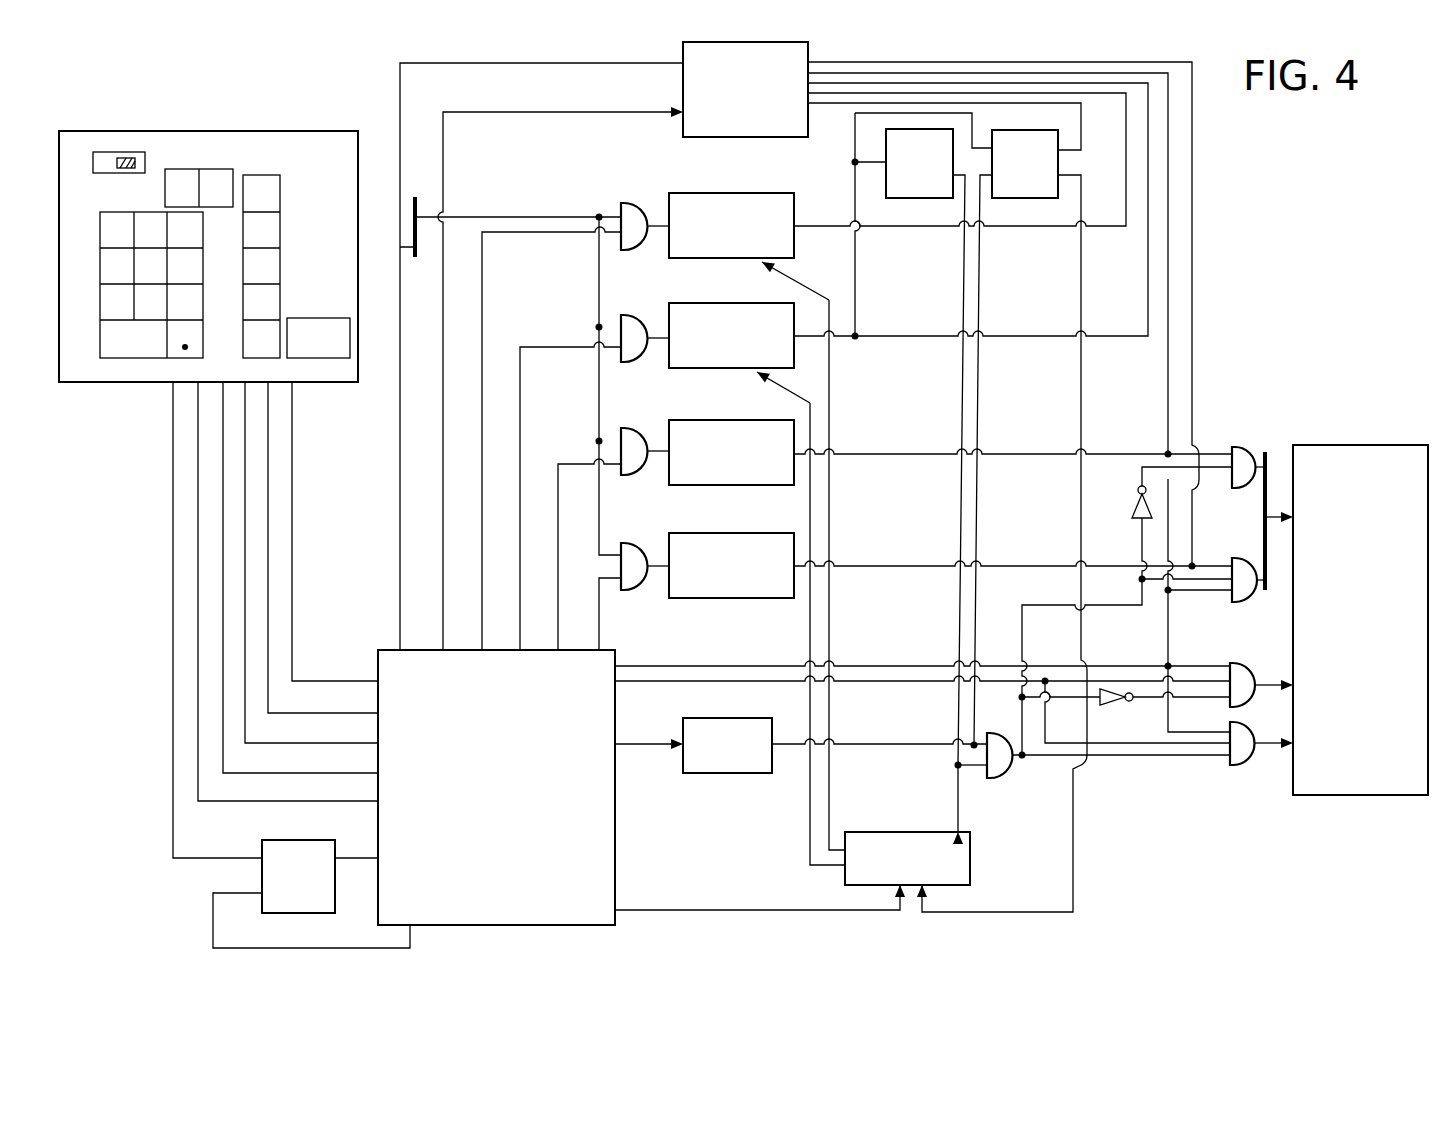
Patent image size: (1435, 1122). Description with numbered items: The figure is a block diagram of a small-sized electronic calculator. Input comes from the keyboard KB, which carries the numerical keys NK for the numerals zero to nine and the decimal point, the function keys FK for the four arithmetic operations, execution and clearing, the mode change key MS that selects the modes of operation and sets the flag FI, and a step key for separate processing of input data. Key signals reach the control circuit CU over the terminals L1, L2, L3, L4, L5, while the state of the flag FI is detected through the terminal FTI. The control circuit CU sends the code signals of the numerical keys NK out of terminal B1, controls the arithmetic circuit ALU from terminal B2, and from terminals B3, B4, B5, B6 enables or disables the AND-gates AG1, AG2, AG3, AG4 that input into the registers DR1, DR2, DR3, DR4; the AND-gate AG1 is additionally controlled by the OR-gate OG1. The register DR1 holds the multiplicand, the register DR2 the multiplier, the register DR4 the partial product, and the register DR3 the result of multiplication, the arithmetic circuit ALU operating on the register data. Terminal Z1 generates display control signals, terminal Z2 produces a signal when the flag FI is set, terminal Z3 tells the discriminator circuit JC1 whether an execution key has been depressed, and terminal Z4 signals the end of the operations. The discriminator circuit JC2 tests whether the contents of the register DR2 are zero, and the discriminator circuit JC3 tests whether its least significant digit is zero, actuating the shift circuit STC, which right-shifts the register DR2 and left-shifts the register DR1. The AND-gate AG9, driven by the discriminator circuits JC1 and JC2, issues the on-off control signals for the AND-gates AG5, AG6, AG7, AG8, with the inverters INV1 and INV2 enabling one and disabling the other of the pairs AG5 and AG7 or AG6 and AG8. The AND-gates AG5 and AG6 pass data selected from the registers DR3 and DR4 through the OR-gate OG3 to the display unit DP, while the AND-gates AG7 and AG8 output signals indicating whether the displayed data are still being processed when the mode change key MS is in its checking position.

The keyboard KB is at (207, 131).
The mode change key MS is at (128, 152).
The numerical keys NK is at (131, 359).
The function keys FK is at (241, 175).
The terminal L1 is at (335, 532).
The terminal L2 is at (323, 548).
The terminal L3 is at (311, 564).
The terminal L4 is at (300, 579).
The terminal L5 is at (288, 592).
The control circuit CU is at (496, 787).
The flag FI is at (262, 874).
The flag detecting terminal FTI is at (373, 858).
The terminal B1 is at (402, 617).
The terminal B2 is at (445, 617).
The terminal B3 is at (484, 617).
The terminal B4 is at (522, 617).
The terminal B5 is at (560, 617).
The terminal B6 is at (601, 617).
The OR-gate OG1 is at (408, 217).
The AND-gate AG1 is at (633, 203).
The AND-gate AG2 is at (633, 315).
The AND-gate AG3 is at (633, 428).
The AND-gate AG4 is at (633, 543).
The register DR1 is at (739, 193).
The register DR2 is at (738, 303).
The register DR3 is at (738, 420).
The register DR4 is at (738, 533).
The arithmetic circuit ALU is at (941, 306).
The discriminator circuit JC1 is at (835, 745).
The discriminator circuit JC2 is at (922, 478).
The discriminator circuit JC3 is at (1002, 521).
The terminal Z1 is at (922, 653).
The terminal Z2 is at (922, 691).
The terminal Z3 is at (649, 753).
The terminal Z4 is at (760, 896).
The shift circuit STC is at (907, 858).
The AND-gate AG9 is at (1000, 778).
The inverter INV1 is at (1138, 490).
The inverter INV2 is at (1123, 705).
The AND-gate AG5 is at (1243, 447).
The AND-gate AG6 is at (1243, 558).
The OR-gate OG3 is at (1269, 452).
The AND-gate AG7 is at (1237, 663).
The AND-gate AG8 is at (1237, 765).
The display unit DP is at (1340, 796).